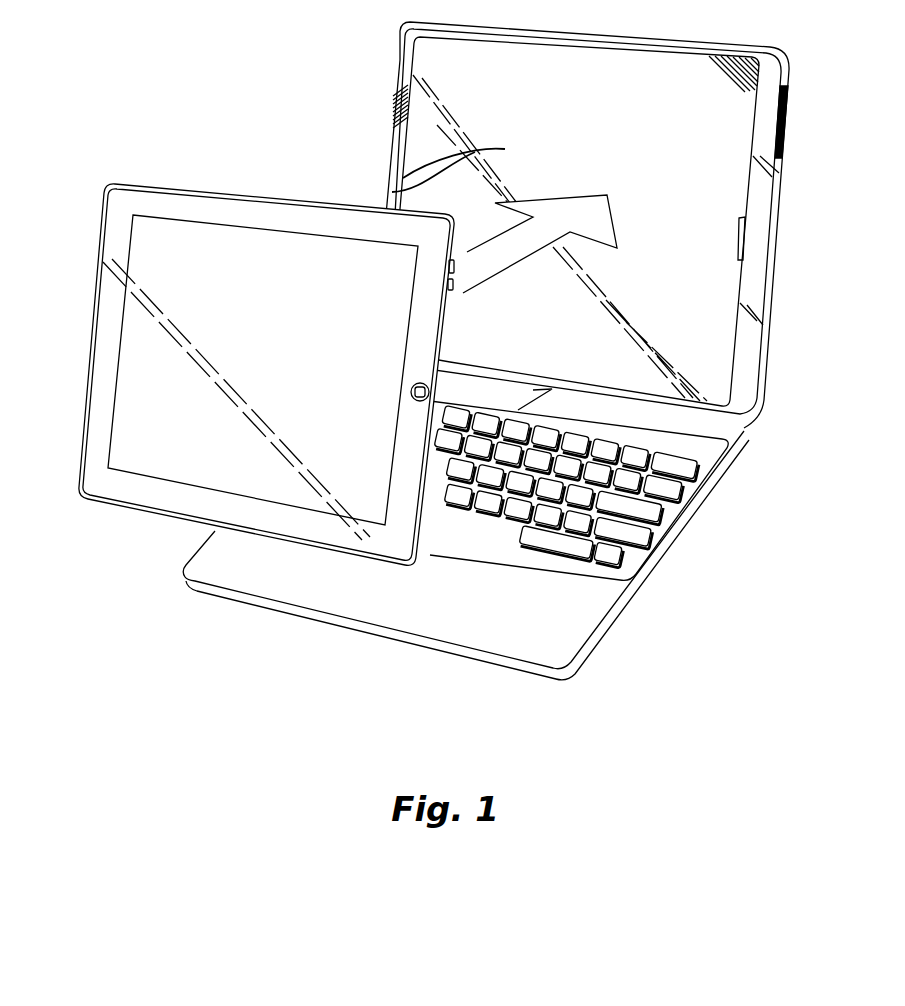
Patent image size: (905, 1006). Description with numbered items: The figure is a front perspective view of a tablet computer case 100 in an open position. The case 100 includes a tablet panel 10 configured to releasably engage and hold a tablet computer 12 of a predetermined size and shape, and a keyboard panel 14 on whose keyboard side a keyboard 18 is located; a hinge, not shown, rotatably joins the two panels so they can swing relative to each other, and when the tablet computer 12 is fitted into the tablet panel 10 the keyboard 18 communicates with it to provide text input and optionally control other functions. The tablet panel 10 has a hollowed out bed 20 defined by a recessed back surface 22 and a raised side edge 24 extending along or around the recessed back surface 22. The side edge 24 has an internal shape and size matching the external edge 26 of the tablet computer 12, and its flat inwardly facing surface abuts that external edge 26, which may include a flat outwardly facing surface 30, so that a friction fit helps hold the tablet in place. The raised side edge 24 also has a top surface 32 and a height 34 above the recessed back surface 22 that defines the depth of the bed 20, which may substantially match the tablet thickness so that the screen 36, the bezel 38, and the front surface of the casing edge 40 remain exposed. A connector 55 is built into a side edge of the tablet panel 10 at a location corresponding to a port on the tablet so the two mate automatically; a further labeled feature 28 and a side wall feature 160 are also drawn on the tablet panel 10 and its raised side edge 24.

The tablet computer case 100 is at (766, 432).
The tablet panel 10 is at (766, 306).
The tablet computer 12 is at (99, 517).
The keyboard panel 14 is at (297, 592).
The keyboard 18 is at (645, 540).
The hollowed out bed 20 is at (570, 118).
The recessed back surface 22 is at (574, 162).
The raised side edge 24 is at (406, 40).
The external edge 26 is at (153, 184).
The side wall of lid 28 is at (394, 156).
The flat outwardly facing surface 30 is at (432, 512).
The top surface 32 is at (770, 82).
The height 34 is at (462, 164).
The screen 36 is at (264, 365).
The bezel 38 is at (102, 352).
The casing edge 40 is at (88, 398).
The connector 55 is at (740, 238).
The port opening in lid side wall 160 is at (792, 124).